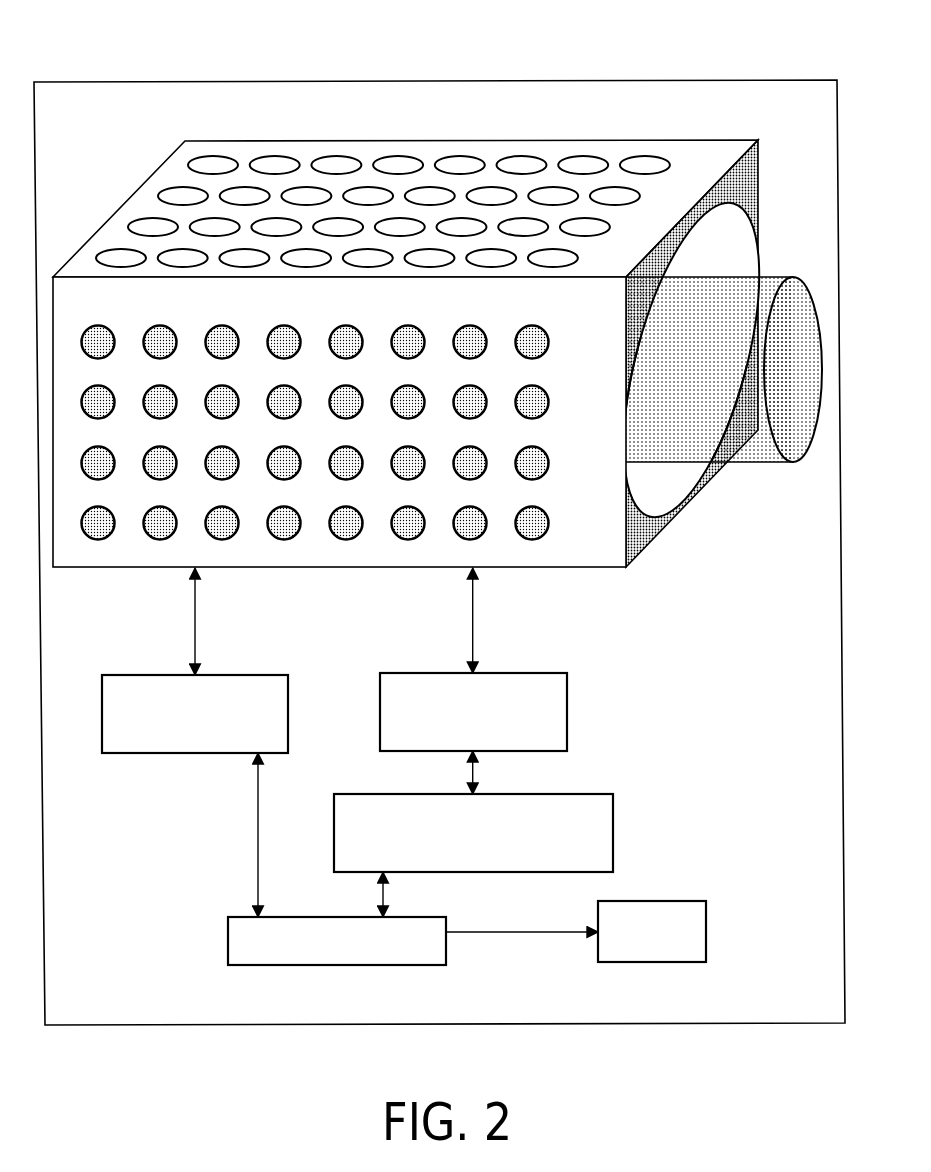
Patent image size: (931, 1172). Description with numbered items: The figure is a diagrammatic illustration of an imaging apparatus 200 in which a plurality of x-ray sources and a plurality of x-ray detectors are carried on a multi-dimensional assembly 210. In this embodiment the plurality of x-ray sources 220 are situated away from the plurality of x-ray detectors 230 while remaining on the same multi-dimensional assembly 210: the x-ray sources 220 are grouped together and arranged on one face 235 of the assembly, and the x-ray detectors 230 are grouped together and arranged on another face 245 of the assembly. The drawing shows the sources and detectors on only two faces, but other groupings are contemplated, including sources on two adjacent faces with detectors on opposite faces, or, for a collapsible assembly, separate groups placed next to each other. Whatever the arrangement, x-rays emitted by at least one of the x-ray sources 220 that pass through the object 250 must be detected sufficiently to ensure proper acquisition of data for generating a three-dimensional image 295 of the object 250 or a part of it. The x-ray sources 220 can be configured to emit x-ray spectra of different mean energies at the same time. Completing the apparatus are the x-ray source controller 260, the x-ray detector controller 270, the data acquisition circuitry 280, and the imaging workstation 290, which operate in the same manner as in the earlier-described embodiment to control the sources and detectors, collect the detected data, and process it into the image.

The imaging apparatus 200 is at (148, 82).
The multi-dimensional assembly 210 is at (405, 181).
The x-ray sources 220 is at (533, 540).
The x-ray detectors 230 is at (398, 166).
The face 235 is at (339, 449).
The another face 245 is at (707, 158).
The object 250 is at (763, 453).
The x-ray source controller 260 is at (127, 675).
The x-ray detector controller 270 is at (567, 698).
The data acquisition circuitry 280 is at (613, 837).
The imaging workstation 290 is at (232, 917).
The three-dimensional image 295 is at (690, 901).